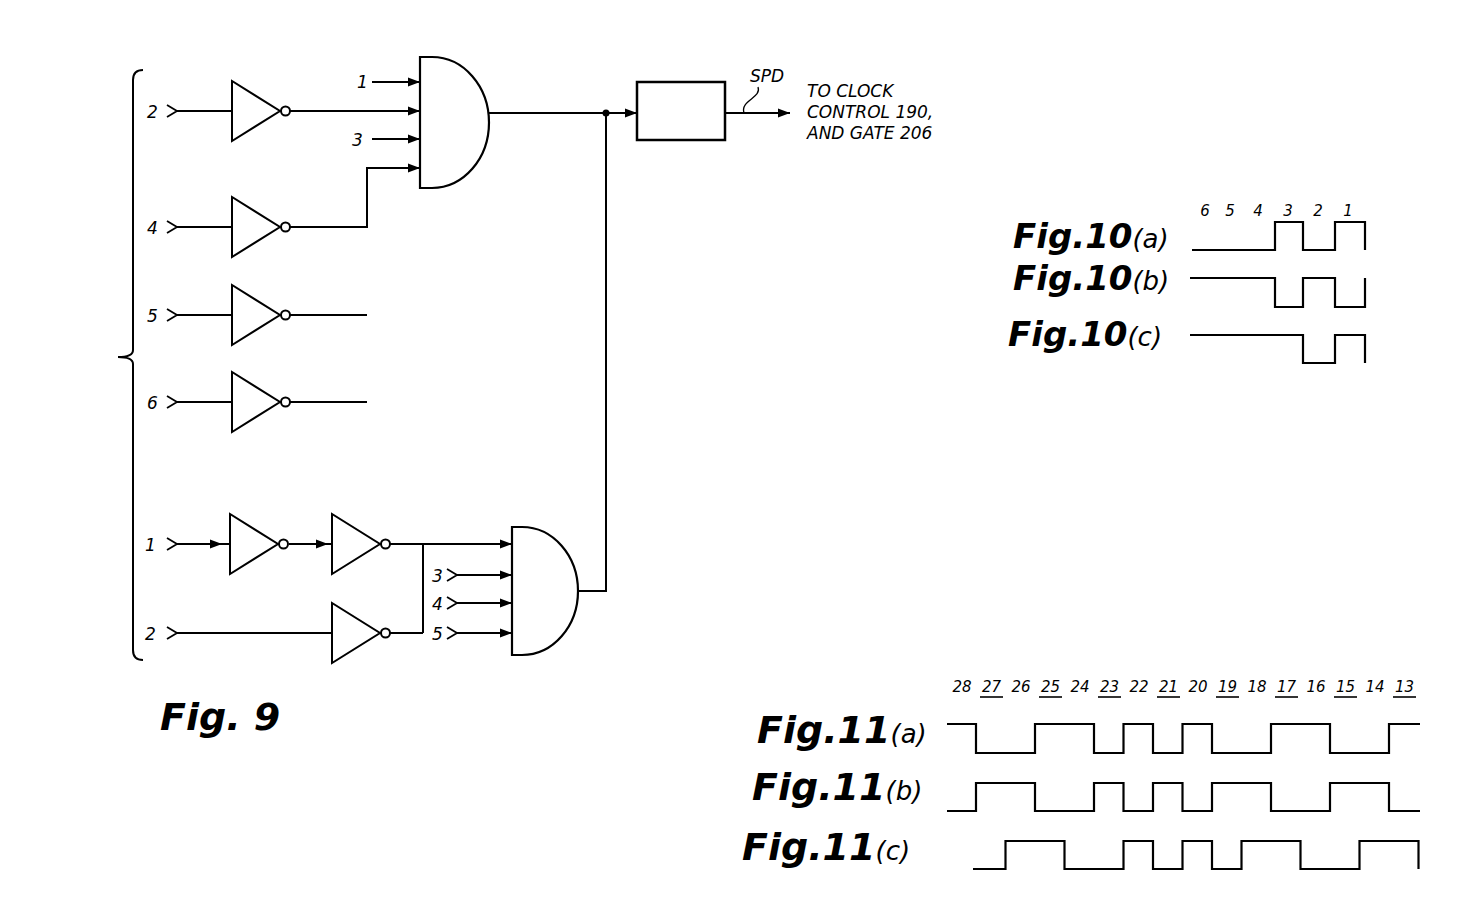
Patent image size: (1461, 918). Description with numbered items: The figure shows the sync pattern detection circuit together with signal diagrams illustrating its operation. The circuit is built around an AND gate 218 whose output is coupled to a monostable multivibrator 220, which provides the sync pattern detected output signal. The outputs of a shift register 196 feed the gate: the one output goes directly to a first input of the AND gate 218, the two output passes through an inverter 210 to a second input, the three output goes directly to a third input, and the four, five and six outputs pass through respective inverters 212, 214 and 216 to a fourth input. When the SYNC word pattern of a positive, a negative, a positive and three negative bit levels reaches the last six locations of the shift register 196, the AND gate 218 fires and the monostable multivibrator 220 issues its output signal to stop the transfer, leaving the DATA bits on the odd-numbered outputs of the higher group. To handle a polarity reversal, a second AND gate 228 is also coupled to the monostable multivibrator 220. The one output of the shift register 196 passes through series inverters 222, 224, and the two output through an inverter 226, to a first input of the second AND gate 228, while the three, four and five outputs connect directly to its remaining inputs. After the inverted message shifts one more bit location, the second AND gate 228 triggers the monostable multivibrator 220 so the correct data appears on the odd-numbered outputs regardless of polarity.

The shift register 196 is at (114, 365).
The inverter 210 is at (254, 93).
The inverter 212 is at (254, 209).
The inverter 214 is at (254, 297).
The inverter 216 is at (254, 384).
The AND gate 218 is at (466, 76).
The monostable multivibrator 220 is at (698, 82).
The inverter 222 is at (254, 528).
The inverter 224 is at (352, 528).
The inverter 226 is at (352, 618).
The second AND gate 228 is at (535, 527).